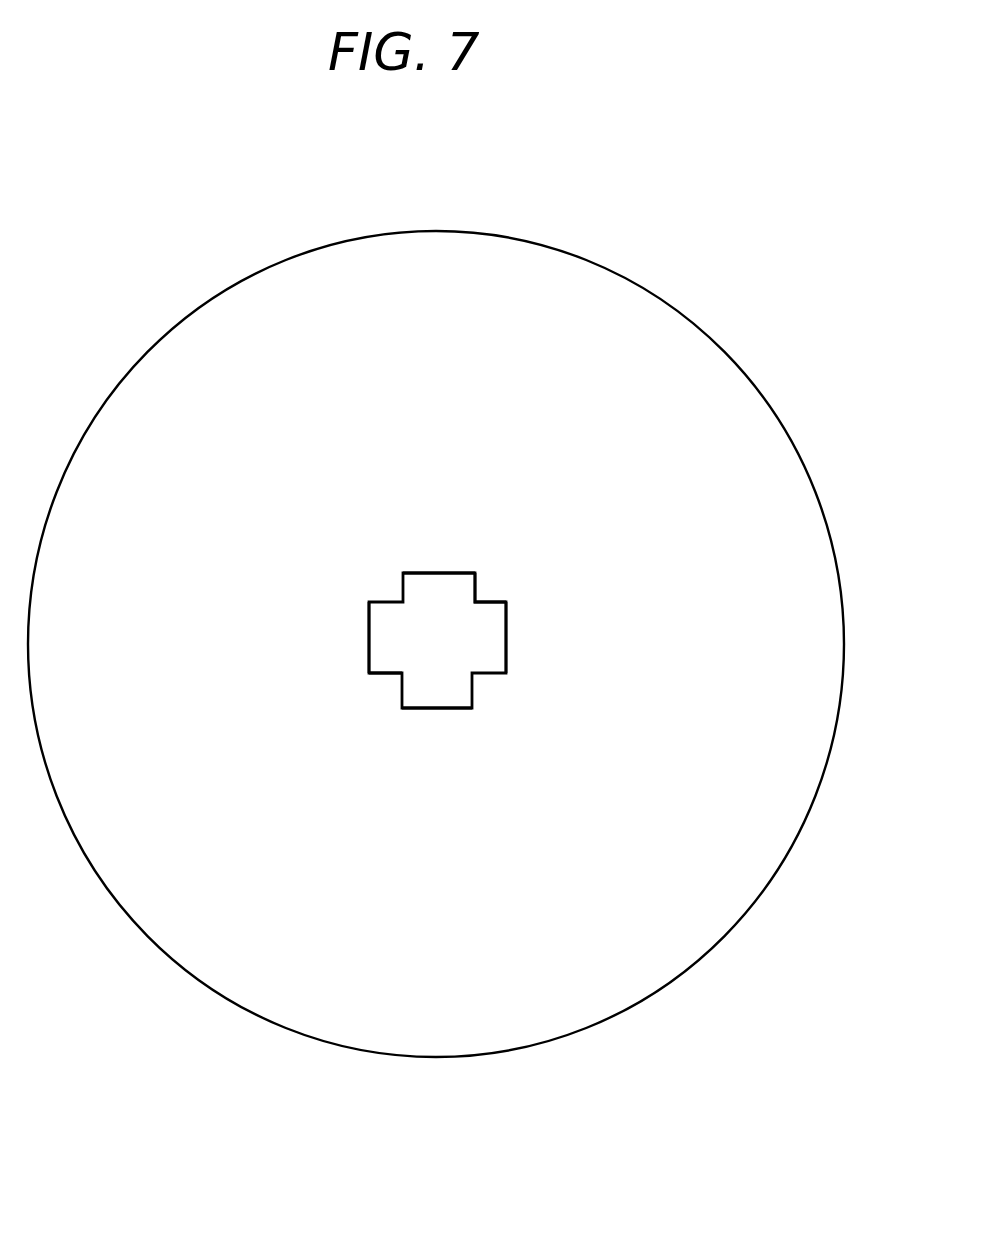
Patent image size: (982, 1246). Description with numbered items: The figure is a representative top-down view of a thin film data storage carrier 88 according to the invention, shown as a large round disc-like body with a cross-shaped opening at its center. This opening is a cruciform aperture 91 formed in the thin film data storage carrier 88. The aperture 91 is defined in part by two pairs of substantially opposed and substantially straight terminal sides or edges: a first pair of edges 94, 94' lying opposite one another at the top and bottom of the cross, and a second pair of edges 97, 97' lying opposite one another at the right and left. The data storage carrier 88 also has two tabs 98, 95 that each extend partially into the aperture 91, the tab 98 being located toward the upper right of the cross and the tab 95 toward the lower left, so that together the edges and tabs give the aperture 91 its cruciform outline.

The thin film data storage carrier 88 is at (657, 990).
The cruciform aperture 91 is at (438, 641).
The terminal side or edge 94 is at (439, 503).
The terminal side or edge 94' is at (435, 758).
The tab 95 is at (388, 682).
The terminal side or edge 97 is at (550, 637).
The terminal side or edge 97' is at (309, 632).
The tab 98 is at (488, 587).